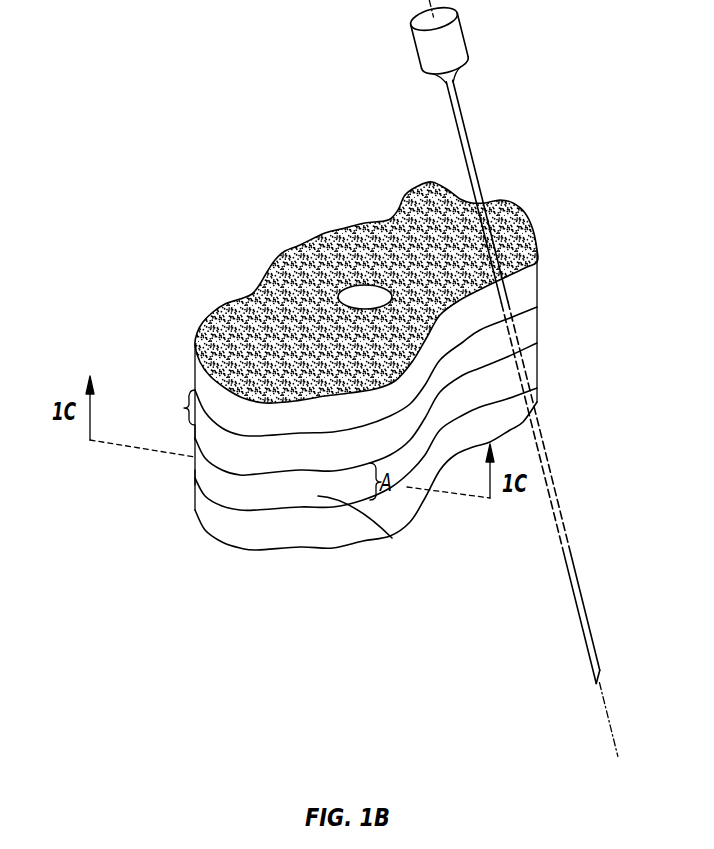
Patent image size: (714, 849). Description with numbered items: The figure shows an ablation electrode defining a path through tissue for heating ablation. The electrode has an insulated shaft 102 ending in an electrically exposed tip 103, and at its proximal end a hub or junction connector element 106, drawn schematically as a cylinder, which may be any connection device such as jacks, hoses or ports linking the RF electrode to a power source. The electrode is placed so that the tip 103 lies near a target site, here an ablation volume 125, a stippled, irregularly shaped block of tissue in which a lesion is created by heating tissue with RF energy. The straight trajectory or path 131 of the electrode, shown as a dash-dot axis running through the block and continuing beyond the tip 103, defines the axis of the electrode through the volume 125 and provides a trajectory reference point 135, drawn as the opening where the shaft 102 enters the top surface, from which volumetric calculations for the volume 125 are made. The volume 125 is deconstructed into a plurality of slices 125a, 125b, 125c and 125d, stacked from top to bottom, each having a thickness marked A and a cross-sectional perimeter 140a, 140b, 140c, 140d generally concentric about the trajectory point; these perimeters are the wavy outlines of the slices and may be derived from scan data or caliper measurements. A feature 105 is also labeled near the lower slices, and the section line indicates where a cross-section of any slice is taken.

The insulated shaft 102 is at (286, 614).
The electrically exposed tip 103 is at (268, 668).
The channel 105 is at (387, 535).
The hub or junction connector element 106 is at (412, 38).
The ablation volume 125 is at (248, 315).
The slice 125a is at (537, 268).
The slice 125b is at (537, 307).
The slice 125c is at (537, 343).
The slice 125d is at (537, 387).
The trajectory or path 131 is at (256, 722).
The trajectory reference point 135 is at (351, 290).
The cross-sectional perimeter 140a is at (280, 255).
The cross-sectional perimeter 140b is at (195, 388).
The cross-sectional perimeter 140c is at (194, 426).
The cross-sectional perimeter 140d is at (195, 478).